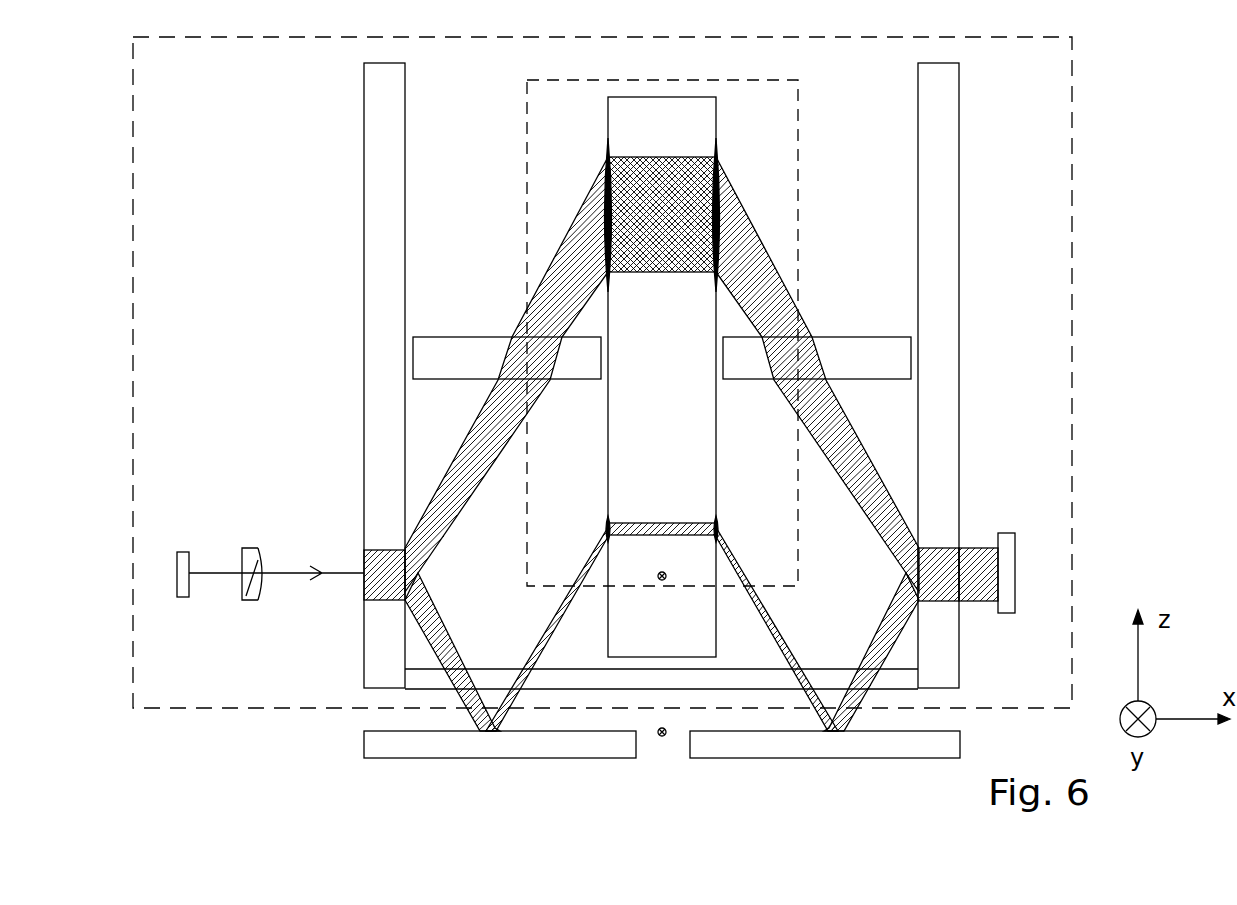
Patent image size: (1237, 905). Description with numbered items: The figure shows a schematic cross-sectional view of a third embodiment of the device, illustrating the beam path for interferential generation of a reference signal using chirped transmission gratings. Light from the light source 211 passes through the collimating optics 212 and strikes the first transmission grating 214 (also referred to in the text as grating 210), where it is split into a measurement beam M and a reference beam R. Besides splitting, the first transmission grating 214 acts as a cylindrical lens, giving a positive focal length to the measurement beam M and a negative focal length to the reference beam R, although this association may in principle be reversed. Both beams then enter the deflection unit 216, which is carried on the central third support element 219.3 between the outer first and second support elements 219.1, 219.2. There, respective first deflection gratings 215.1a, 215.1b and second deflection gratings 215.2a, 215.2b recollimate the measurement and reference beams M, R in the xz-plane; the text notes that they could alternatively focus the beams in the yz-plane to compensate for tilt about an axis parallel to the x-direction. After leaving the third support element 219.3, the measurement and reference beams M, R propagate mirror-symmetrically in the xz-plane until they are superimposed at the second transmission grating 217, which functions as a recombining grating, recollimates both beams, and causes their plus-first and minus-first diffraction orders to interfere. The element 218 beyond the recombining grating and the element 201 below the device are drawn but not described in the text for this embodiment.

The first transmission grating 210 is at (1065, 71).
The first support element 219.1 is at (375, 105).
The second support element 219.2 is at (950, 97).
The third support element 219.3 is at (683, 150).
The deflection unit 216 is at (800, 241).
The reference beam R is at (513, 298).
The measurement beam M is at (432, 655).
The first deflection grating 215.1b is at (588, 192).
The second deflection grating 215.2b is at (738, 192).
The first deflection grating 215.1a is at (625, 520).
The second deflection grating 215.2a is at (705, 520).
The first transmission grating 214 is at (395, 548).
The second transmission grating 217 is at (938, 545).
The detector 218 is at (1005, 615).
The light source 211 is at (183, 600).
The collimating optics 212 is at (250, 602).
The measurement object 201 is at (440, 767).